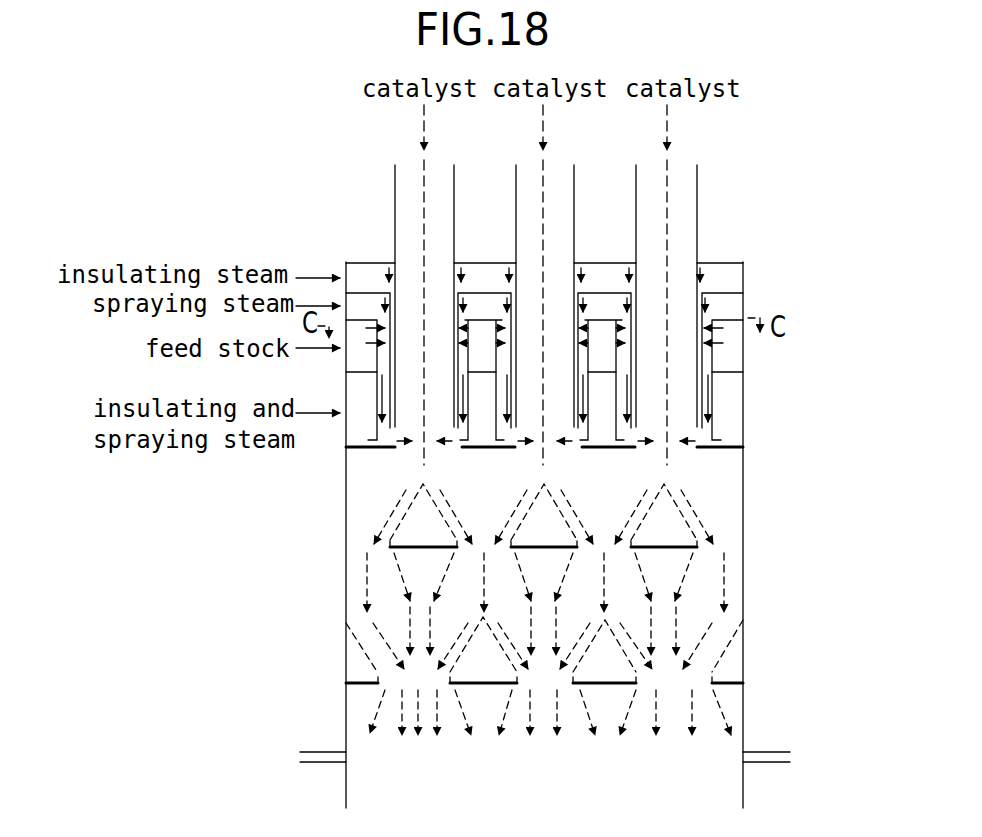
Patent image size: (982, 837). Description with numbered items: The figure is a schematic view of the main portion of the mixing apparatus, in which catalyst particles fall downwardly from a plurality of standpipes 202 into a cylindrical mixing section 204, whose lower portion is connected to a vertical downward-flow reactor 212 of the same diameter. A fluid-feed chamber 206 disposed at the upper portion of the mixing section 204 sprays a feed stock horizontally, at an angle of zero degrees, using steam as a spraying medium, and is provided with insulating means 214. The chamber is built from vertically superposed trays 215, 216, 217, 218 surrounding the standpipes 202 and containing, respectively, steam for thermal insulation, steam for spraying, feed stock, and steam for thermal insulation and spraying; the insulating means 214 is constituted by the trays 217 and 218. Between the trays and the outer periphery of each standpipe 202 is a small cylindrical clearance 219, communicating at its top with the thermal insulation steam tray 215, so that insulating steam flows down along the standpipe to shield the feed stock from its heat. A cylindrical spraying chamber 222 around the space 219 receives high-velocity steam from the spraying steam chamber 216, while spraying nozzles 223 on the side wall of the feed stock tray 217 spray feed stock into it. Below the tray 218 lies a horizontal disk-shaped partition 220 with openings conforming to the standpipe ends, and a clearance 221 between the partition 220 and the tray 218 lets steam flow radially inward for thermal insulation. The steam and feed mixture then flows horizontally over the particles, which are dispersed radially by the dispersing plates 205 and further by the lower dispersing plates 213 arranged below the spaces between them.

The standpipe 202 is at (393, 186).
The mixing section 204 is at (344, 529).
The dispersing plate 205 is at (400, 552).
The fluid-feed chamber 206 is at (345, 261).
The reactor 212 is at (745, 792).
The dispersing plate 213 is at (350, 690).
The insulating means 214 is at (748, 261).
The thermal insulation steam tray 215 is at (470, 285).
The spraying steam chamber 216 is at (484, 300).
The feed stock tray 217 is at (497, 355).
The thermal insulating and spraying steam tray 218 is at (475, 440).
The clearance 219 is at (393, 305).
The partition 220 is at (362, 450).
The clearance 221 is at (718, 447).
The spraying chamber 222 is at (712, 358).
The spraying nozzle 223 is at (366, 346).